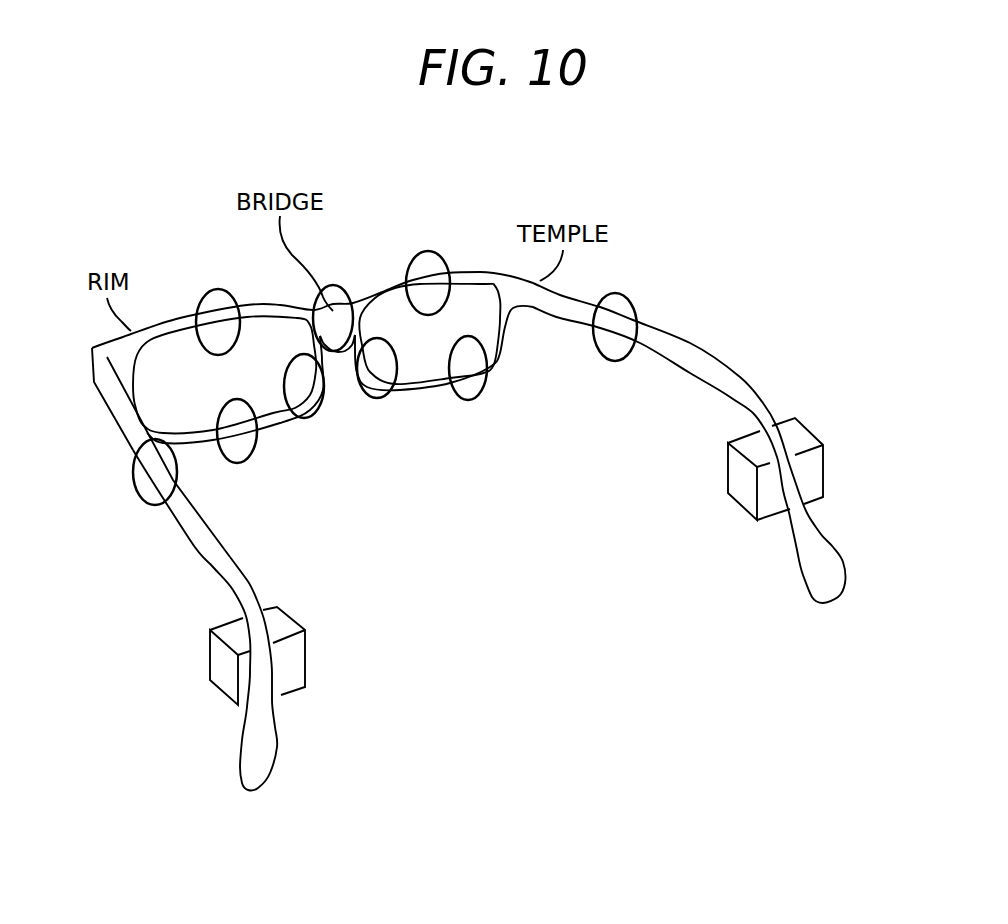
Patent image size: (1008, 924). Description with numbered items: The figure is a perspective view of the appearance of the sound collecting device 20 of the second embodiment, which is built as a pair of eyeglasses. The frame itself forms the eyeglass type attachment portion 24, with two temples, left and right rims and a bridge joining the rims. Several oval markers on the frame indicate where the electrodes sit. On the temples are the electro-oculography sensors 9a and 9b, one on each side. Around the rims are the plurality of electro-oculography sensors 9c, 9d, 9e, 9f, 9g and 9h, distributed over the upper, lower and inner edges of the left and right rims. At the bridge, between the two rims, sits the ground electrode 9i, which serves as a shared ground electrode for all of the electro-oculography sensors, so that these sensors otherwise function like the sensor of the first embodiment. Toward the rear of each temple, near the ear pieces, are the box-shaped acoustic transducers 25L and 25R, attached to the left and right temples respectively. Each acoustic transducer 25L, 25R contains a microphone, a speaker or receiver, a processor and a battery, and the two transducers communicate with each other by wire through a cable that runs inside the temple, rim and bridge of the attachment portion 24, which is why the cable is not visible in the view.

The sound collecting device 20 is at (649, 243).
The eyeglass type attachment portion 24 is at (806, 518).
The acoustic transducer 25L is at (810, 437).
The acoustic transducer 25R is at (212, 653).
The electro-oculography sensor 9a is at (630, 302).
The electro-oculography sensor 9b is at (133, 478).
The electro-oculography sensor 9c is at (428, 250).
The electro-oculography sensor 9d is at (488, 393).
The electro-oculography sensor 9e is at (385, 395).
The electro-oculography sensor 9f is at (318, 410).
The electro-oculography sensor 9g is at (218, 290).
The electro-oculography sensor 9h is at (245, 465).
The ground electrode 9i is at (330, 287).